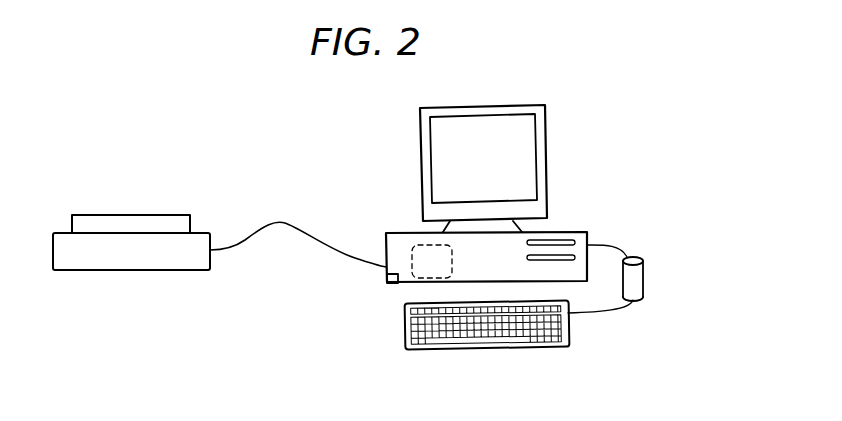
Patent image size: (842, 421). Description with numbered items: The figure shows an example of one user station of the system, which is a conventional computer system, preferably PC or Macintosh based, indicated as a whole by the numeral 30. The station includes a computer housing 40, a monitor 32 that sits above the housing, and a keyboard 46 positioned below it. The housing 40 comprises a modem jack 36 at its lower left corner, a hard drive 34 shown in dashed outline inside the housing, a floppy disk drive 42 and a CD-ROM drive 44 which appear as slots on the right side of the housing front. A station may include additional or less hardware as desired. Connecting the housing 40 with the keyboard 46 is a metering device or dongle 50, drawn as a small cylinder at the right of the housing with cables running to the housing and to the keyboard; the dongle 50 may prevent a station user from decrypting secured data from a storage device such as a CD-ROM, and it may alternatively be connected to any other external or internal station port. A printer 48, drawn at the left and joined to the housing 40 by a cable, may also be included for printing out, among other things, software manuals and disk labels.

The computer system 30 is at (492, 86).
The monitor 32 is at (418, 153).
The hard drive 34 is at (420, 243).
The modem jack 36 is at (388, 283).
The computer housing 40 is at (378, 251).
The floppy disk drive 42 is at (567, 242).
The CD-ROM drive 44 is at (588, 235).
The keyboard 46 is at (405, 322).
The printer 48 is at (100, 271).
The dongle 50 is at (646, 276).